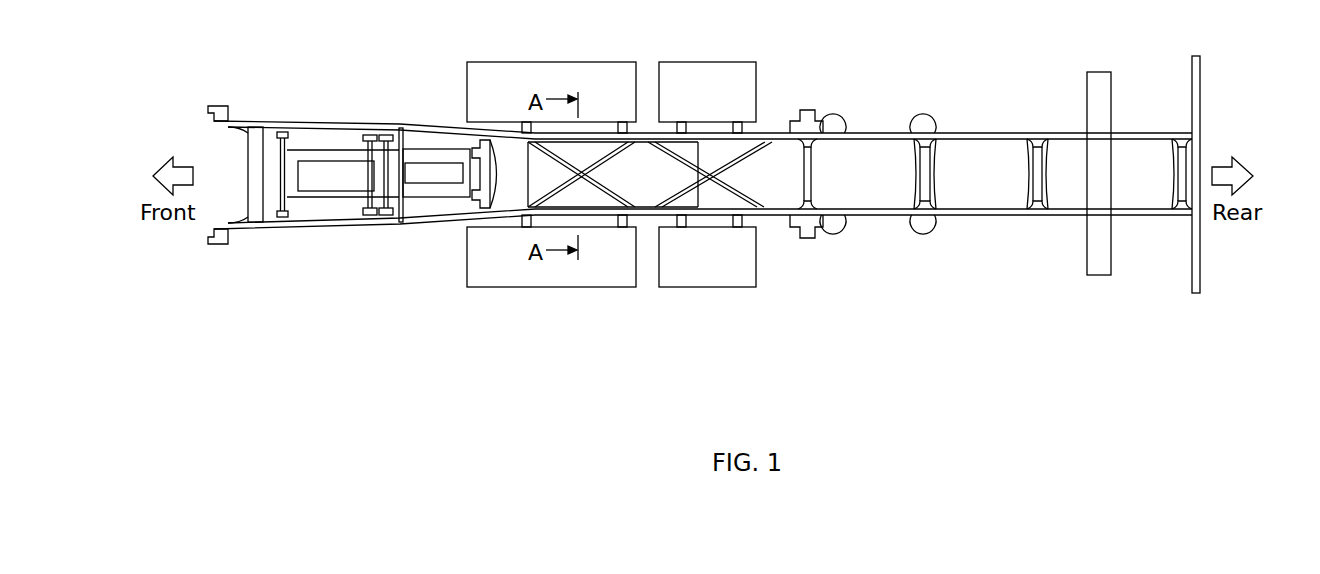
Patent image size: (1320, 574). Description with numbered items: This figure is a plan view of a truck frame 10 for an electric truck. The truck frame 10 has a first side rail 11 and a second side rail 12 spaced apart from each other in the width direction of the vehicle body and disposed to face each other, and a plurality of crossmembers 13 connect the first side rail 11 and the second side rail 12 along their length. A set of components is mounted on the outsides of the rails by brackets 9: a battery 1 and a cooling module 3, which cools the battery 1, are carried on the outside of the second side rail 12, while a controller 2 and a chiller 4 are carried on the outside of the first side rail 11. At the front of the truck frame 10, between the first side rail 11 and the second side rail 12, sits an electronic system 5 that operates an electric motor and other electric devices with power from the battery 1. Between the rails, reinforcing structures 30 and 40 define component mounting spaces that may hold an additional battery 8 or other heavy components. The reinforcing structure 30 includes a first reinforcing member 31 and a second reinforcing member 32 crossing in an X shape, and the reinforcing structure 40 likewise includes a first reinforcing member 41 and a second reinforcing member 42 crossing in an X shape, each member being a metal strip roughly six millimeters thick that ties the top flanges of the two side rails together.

The battery 1 is at (557, 72).
The controller 2 is at (557, 287).
The cooling module 3 is at (708, 72).
The chiller 4 is at (710, 287).
The electronic system 5 is at (333, 197).
The additional battery 8 is at (642, 190).
The brackets 9 is at (620, 127).
The truck frame 10 is at (344, 92).
The first side rail 11 is at (374, 225).
The second side rail 12 is at (378, 128).
The crossmembers 13 is at (252, 149).
The reinforcing structure 30 is at (547, 175).
The first reinforcing member 31 is at (527, 207).
The second reinforcing member 32 is at (525, 155).
The reinforcing structure 40 is at (753, 177).
The first reinforcing member 41 is at (755, 132).
The second reinforcing member 42 is at (762, 197).